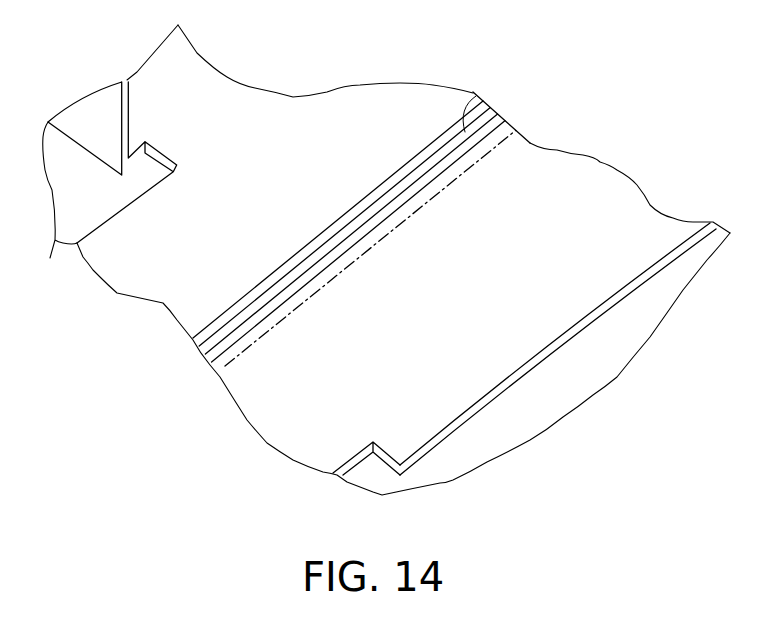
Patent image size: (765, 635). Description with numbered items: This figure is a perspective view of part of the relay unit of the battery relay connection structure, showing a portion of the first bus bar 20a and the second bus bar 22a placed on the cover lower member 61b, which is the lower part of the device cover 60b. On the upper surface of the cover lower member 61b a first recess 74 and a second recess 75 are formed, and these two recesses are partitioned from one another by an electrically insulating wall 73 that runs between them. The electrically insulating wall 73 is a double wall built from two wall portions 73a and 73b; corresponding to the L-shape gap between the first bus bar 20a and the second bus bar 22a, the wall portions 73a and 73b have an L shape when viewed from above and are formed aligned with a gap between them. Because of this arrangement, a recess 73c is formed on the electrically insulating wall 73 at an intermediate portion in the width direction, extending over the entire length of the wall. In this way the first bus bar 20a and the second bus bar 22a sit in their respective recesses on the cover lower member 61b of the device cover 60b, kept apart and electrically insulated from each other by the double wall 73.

The first bus bar 20a is at (578, 183).
The second bus bar 22a is at (337, 110).
The device cover 60b is at (457, 297).
The cover lower member 61b is at (537, 403).
The electrically insulating wall 73 is at (354, 233).
The wall portion 73a is at (378, 187).
The wall portion 73b is at (423, 204).
The recess 73c is at (473, 95).
The first recess 74 is at (507, 427).
The second recess 75 is at (110, 202).